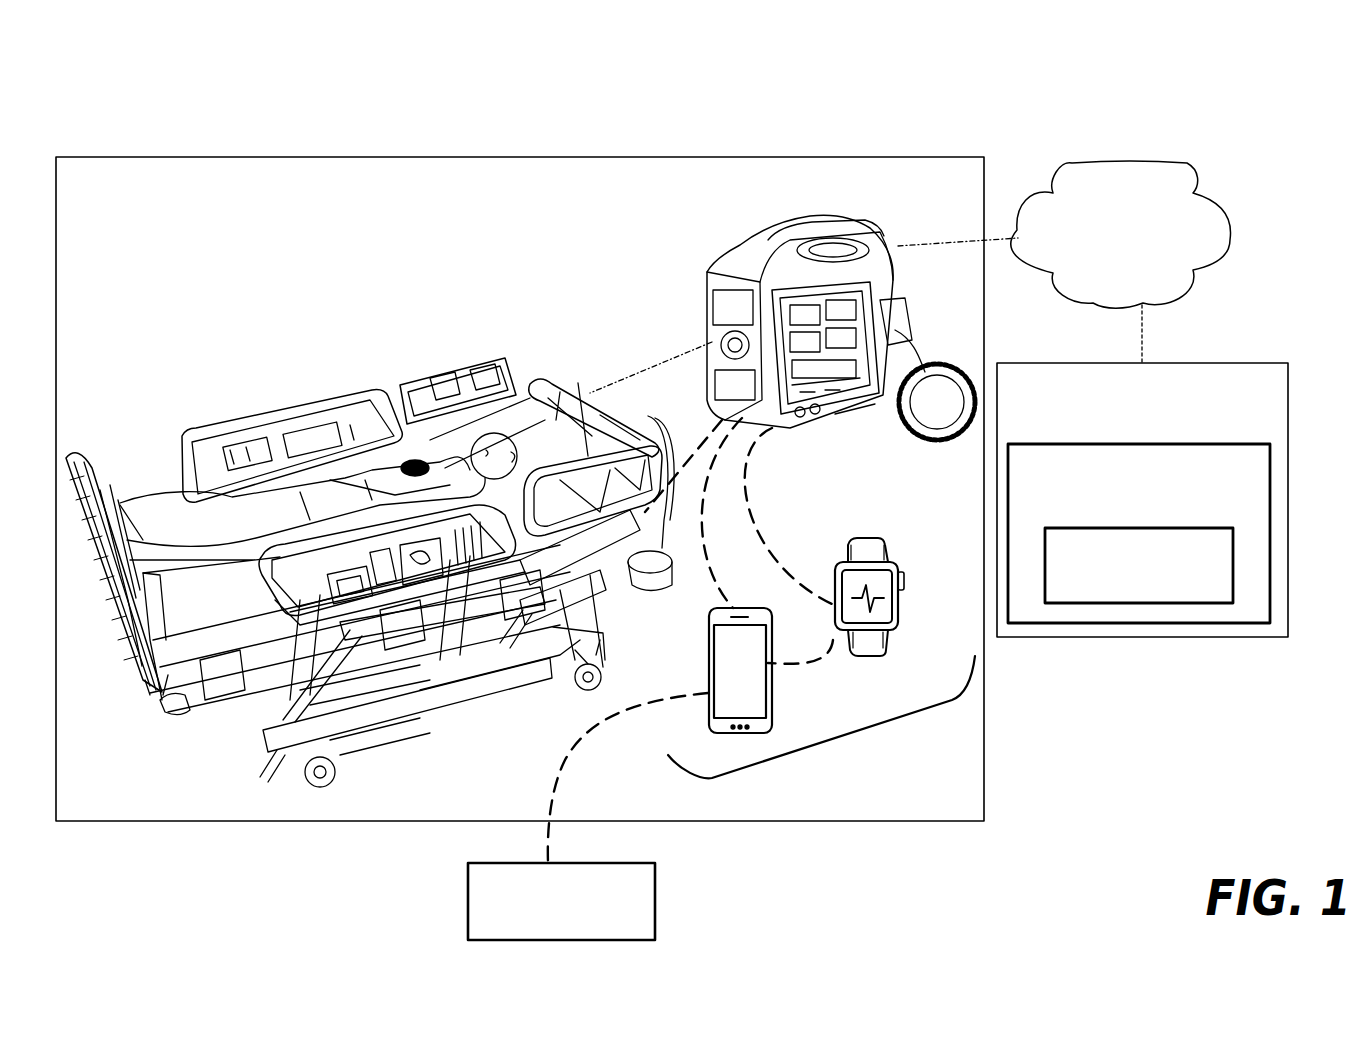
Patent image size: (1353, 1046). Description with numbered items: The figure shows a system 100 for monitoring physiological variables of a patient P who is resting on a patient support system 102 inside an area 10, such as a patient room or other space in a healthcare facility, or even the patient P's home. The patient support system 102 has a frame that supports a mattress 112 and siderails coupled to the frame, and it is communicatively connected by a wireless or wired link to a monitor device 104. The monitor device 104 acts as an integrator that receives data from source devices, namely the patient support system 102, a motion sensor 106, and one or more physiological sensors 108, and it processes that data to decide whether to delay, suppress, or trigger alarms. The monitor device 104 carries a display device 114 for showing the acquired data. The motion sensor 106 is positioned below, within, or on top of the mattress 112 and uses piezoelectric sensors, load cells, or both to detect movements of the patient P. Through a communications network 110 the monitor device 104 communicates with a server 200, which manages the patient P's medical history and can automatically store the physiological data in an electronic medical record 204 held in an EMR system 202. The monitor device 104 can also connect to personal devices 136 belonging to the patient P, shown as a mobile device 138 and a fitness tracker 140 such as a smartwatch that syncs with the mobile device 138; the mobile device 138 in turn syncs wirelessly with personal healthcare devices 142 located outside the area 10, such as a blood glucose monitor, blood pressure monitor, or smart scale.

The system 100 is at (1177, 93).
The area 10 is at (222, 157).
The patient support system 102 is at (520, 425).
The monitor device 104 is at (811, 199).
The motion sensor 106 is at (233, 692).
The physiological sensors 108 is at (415, 463).
The communications network 110 is at (1093, 158).
The mattress 112 is at (190, 705).
The display device 114 is at (850, 412).
The personal devices 136 is at (830, 740).
The mobile device 138 is at (709, 648).
The fitness tracker 140 is at (898, 628).
The personal healthcare devices 142 is at (468, 905).
The server 200 is at (1142, 500).
The EMR system 202 is at (1139, 533).
The electronic medical record 204 is at (1139, 565).
The patient P is at (163, 525).